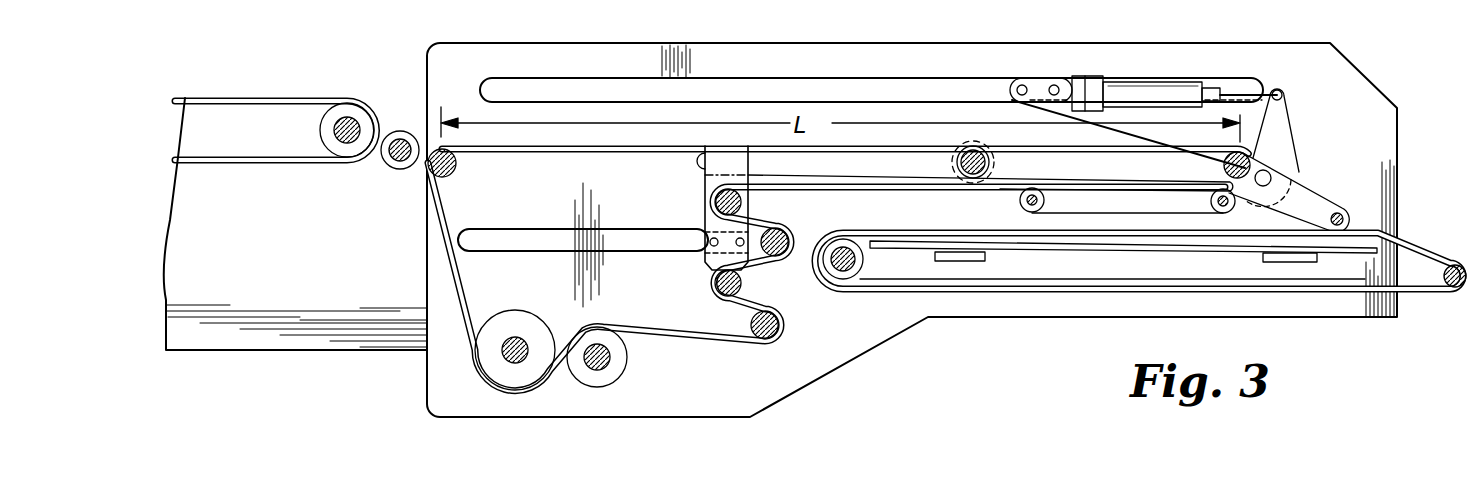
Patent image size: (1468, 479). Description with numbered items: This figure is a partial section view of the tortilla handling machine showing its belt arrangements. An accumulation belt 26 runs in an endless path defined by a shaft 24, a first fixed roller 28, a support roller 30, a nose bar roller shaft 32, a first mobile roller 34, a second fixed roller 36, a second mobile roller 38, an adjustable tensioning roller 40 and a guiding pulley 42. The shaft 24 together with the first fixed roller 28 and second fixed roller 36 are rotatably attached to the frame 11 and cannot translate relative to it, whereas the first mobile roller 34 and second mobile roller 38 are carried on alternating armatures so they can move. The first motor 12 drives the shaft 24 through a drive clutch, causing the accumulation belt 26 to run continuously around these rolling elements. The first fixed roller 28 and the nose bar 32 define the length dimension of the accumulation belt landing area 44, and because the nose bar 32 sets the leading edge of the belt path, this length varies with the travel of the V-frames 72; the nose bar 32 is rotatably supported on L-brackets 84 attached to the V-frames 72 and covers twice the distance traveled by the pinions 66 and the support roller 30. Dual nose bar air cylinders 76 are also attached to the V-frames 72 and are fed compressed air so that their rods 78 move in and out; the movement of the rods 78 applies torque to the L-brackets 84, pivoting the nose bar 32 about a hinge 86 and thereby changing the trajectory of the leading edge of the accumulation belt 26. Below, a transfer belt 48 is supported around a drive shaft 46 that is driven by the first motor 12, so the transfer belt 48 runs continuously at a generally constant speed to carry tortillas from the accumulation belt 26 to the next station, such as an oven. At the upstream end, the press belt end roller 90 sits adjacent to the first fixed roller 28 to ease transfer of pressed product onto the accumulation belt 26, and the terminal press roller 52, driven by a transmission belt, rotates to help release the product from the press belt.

The frame 11 is at (1035, 317).
The first motor 12 is at (285, 175).
The shaft 24 is at (522, 340).
The accumulation belt 26 is at (458, 280).
The first fixed roller 28 is at (457, 167).
The support roller 30 is at (966, 183).
The nose bar roller shaft 32 is at (1338, 208).
The first mobile roller 34 is at (712, 205).
The second fixed roller 36 is at (790, 236).
The second mobile roller 38 is at (712, 283).
The adjustable tensioning roller 40 is at (773, 340).
The guiding pulley 42 is at (612, 368).
The accumulation belt landing area 44 is at (1058, 140).
The drive shaft 46 is at (848, 270).
The transfer belt 48 is at (1147, 297).
The terminal press roller 52 is at (400, 132).
The pinions 66 is at (966, 138).
The V-frames 72 is at (1180, 112).
The nose bar air cylinders 76 is at (1153, 95).
The rods 78 is at (1262, 85).
The L-brackets 84 is at (1292, 118).
The hinge 86 is at (1270, 178).
The press belt end roller 90 is at (333, 130).